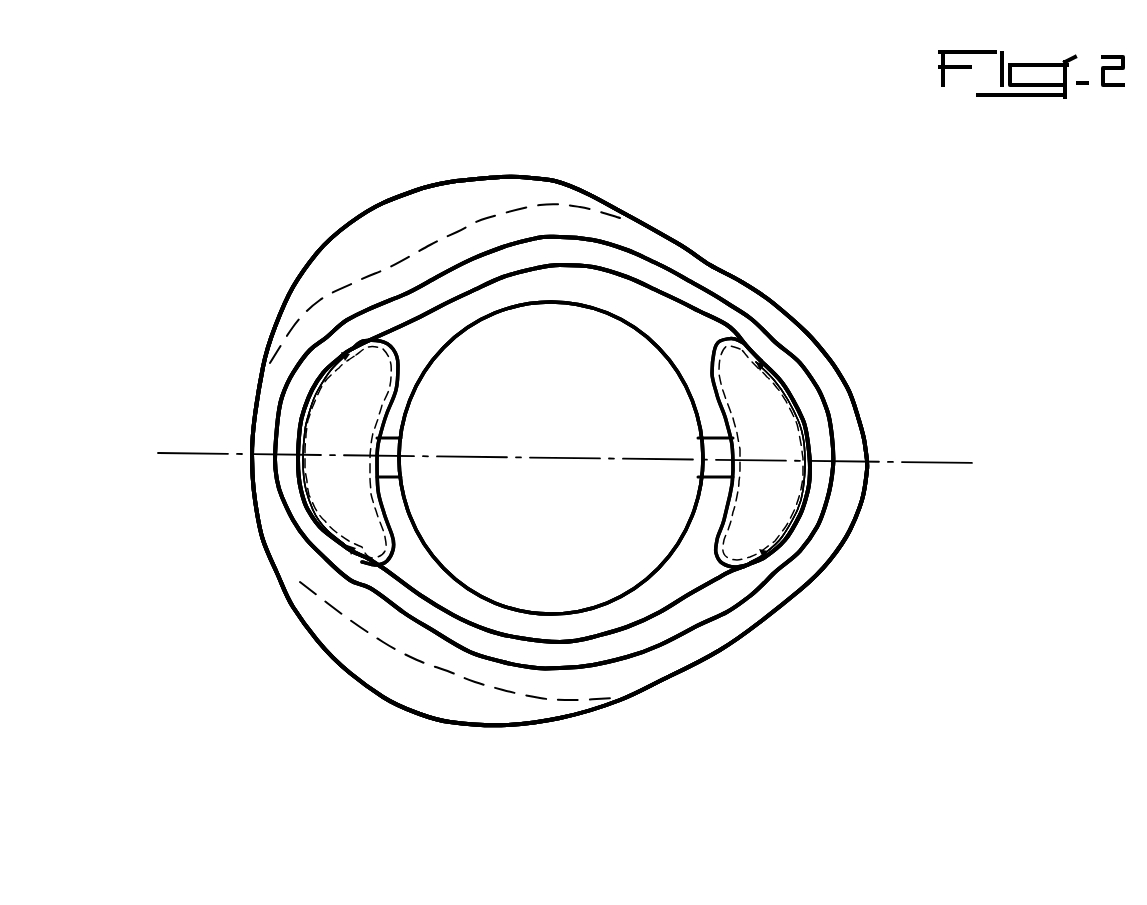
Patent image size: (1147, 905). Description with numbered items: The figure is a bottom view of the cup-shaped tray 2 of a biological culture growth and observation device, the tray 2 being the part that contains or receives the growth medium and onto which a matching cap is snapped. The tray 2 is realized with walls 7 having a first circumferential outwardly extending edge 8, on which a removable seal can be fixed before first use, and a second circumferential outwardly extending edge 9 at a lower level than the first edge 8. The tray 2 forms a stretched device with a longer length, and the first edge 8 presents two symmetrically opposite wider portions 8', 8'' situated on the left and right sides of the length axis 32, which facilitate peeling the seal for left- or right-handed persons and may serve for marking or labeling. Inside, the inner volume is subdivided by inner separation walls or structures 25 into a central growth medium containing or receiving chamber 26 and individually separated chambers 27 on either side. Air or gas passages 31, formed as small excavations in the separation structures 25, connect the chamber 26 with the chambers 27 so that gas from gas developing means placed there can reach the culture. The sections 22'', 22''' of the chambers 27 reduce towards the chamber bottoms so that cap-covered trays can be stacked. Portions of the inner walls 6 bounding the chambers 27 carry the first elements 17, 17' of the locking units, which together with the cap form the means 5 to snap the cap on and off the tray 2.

The cup-shaped tray 2 is at (515, 108).
The means to snap on/off the cap 5 is at (283, 436).
The inner walls 6 is at (554, 344).
The walls 7 is at (577, 303).
The first circumferential edge 8 is at (559, 488).
The wider portion of the first circumferential edge 8' is at (559, 488).
The wider portion of the first circumferential edge 8'' is at (559, 362).
The second circumferential outwardly extending edge 9 is at (633, 640).
The first element of the locking unit 17 is at (258, 452).
The first element of the locking unit 17' is at (851, 451).
The section of the chamber 22'' is at (260, 468).
The section of the chamber 22''' is at (857, 459).
The inner separation walls or structures 25 is at (403, 395).
The growth medium containing or receiving chamber 26 is at (551, 458).
The individually separated chamber 27 is at (554, 453).
The air or gas passages 31 is at (712, 437).
The length axis 32 is at (590, 466).